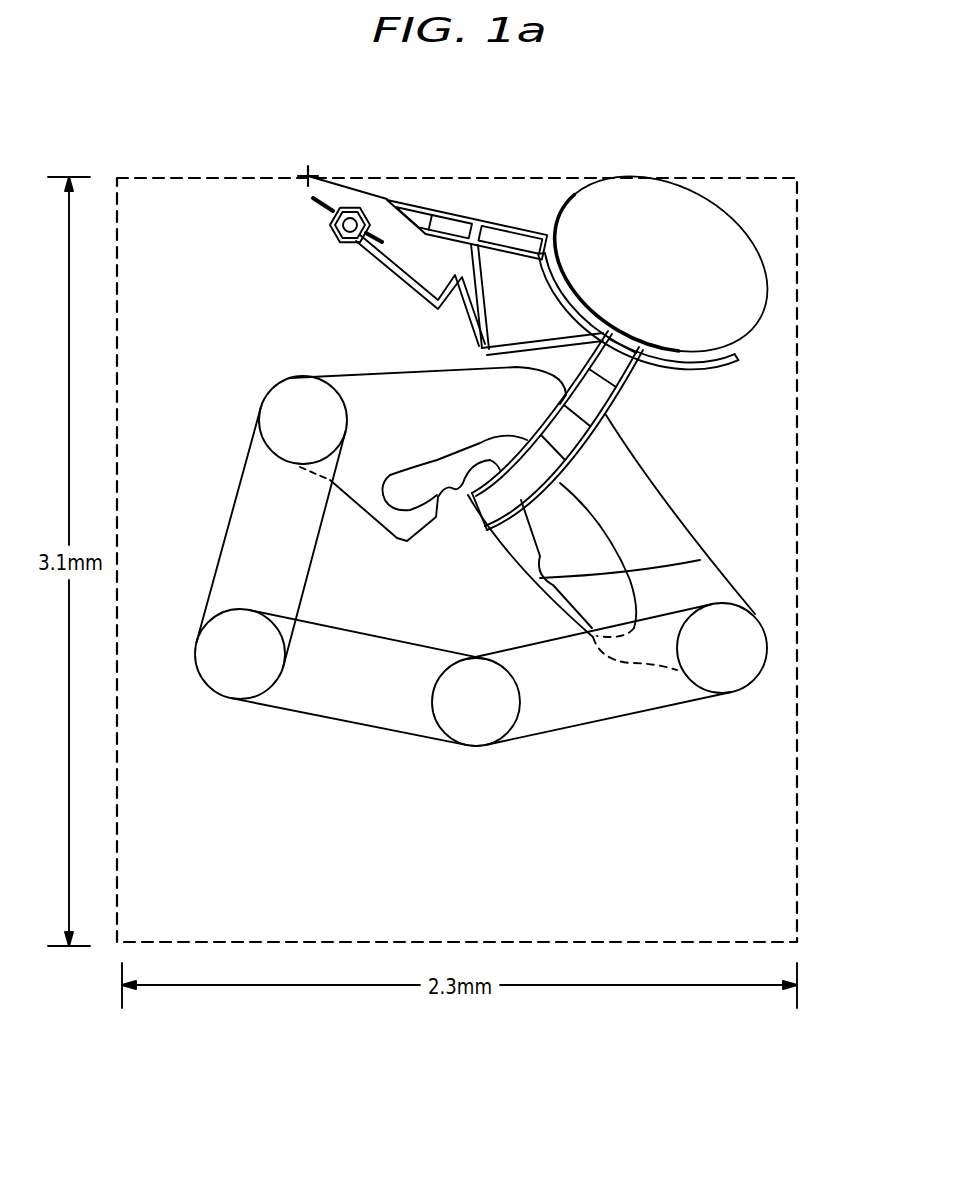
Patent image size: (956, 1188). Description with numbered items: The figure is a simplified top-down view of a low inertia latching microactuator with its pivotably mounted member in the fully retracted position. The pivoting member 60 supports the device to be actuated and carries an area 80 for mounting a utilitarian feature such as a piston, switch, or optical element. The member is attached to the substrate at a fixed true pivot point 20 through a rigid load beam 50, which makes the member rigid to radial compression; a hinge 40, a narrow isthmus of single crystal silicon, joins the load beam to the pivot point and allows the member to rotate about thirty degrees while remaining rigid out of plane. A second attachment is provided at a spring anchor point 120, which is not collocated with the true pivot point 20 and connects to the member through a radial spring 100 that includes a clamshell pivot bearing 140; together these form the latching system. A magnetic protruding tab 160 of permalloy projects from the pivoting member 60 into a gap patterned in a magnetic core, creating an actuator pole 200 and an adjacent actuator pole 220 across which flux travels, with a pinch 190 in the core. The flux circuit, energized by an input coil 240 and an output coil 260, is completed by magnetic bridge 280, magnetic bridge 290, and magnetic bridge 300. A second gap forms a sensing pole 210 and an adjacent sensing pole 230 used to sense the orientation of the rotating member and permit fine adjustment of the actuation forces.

The true pivot point 20 is at (305, 172).
The hinge 40 is at (343, 187).
The rigid load beam 50 is at (470, 207).
The pivoting member 60 is at (680, 180).
The area for mounting utilitarian feature 80 is at (730, 282).
The radial spring 100 is at (392, 277).
The spring anchor point 120 is at (345, 228).
The clam shell pivot bearing 140 is at (345, 222).
The magnetic protruding tab 160 is at (480, 513).
The pinch 190 is at (700, 560).
The actuator pole 200 is at (530, 403).
The sensing pole 210 is at (473, 471).
The adjacent actuator pole 220 is at (677, 543).
The adjacent sensing pole 230 is at (520, 533).
The input coil 240 is at (280, 408).
The output coil 260 is at (725, 657).
The magnetic bridge 1 280 is at (247, 520).
The magnetic bridge 2 290 is at (343, 700).
The magnetic bridge 3 300 is at (572, 710).